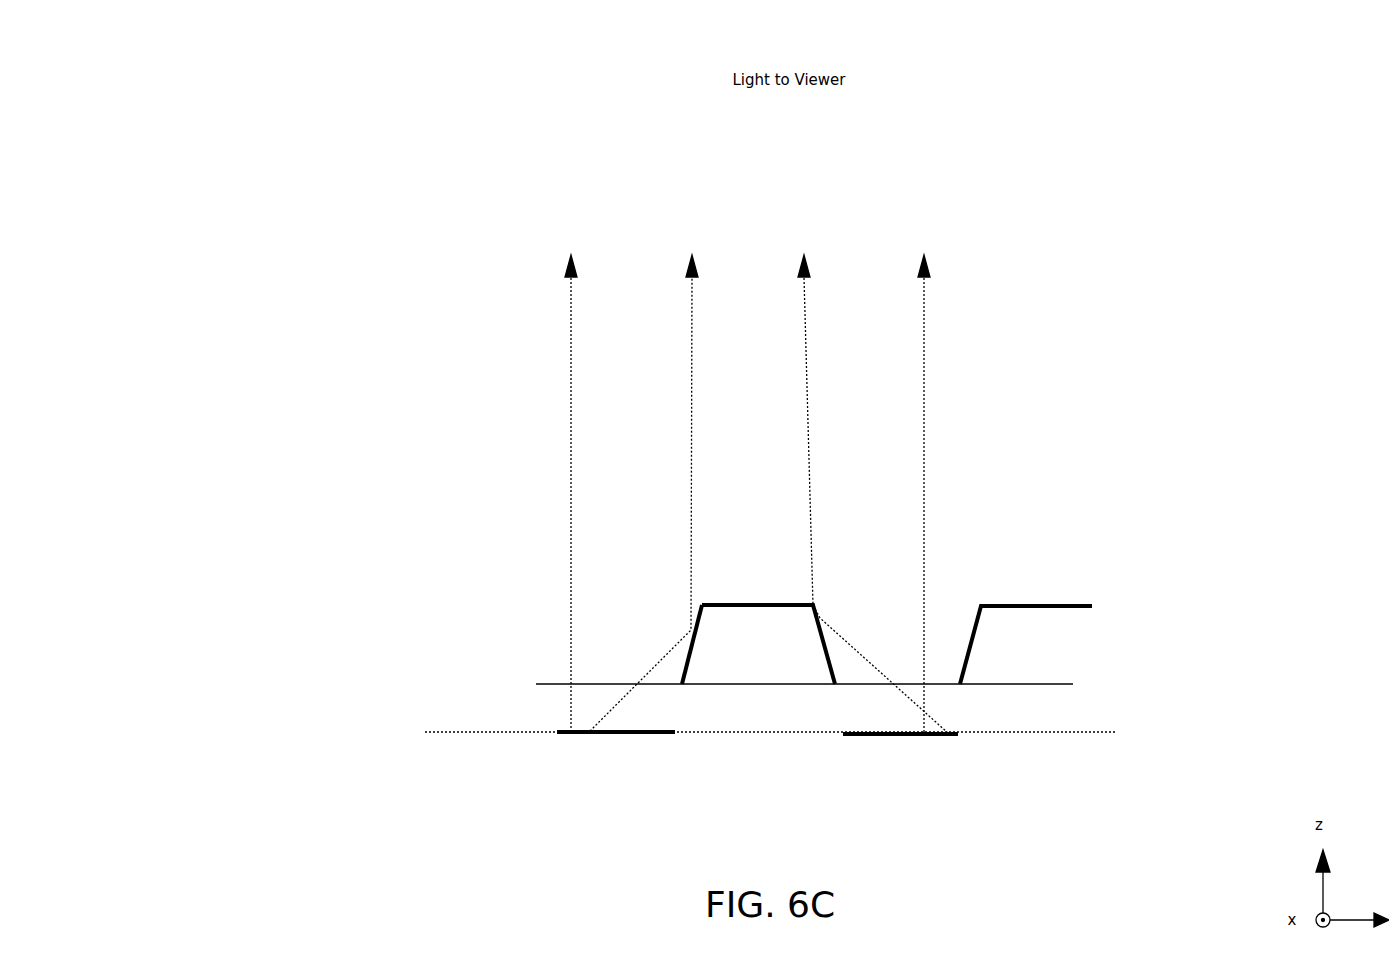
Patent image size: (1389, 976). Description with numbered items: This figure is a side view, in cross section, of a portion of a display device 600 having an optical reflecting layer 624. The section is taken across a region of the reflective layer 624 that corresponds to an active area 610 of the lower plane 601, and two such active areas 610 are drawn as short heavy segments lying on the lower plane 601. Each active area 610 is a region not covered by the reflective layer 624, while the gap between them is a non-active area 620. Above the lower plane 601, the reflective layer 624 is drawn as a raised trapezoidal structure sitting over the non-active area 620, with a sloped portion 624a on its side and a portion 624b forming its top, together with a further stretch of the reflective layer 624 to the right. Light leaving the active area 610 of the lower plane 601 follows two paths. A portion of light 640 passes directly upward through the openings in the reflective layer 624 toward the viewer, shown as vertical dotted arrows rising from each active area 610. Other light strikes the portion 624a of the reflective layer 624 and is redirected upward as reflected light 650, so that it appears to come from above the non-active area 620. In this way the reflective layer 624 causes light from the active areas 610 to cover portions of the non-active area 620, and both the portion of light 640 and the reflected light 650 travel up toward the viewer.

The display device 600 is at (152, 48).
The lower plane 601 is at (1017, 734).
The active area 610 is at (967, 777).
The non-active area 620 is at (748, 733).
The reflective layer 624 is at (1062, 606).
The portion of the reflective layer 624a is at (688, 655).
The portion of the reflective layer 624b is at (760, 605).
The portion of light 640 is at (753, 442).
The reflected light 650 is at (769, 454).